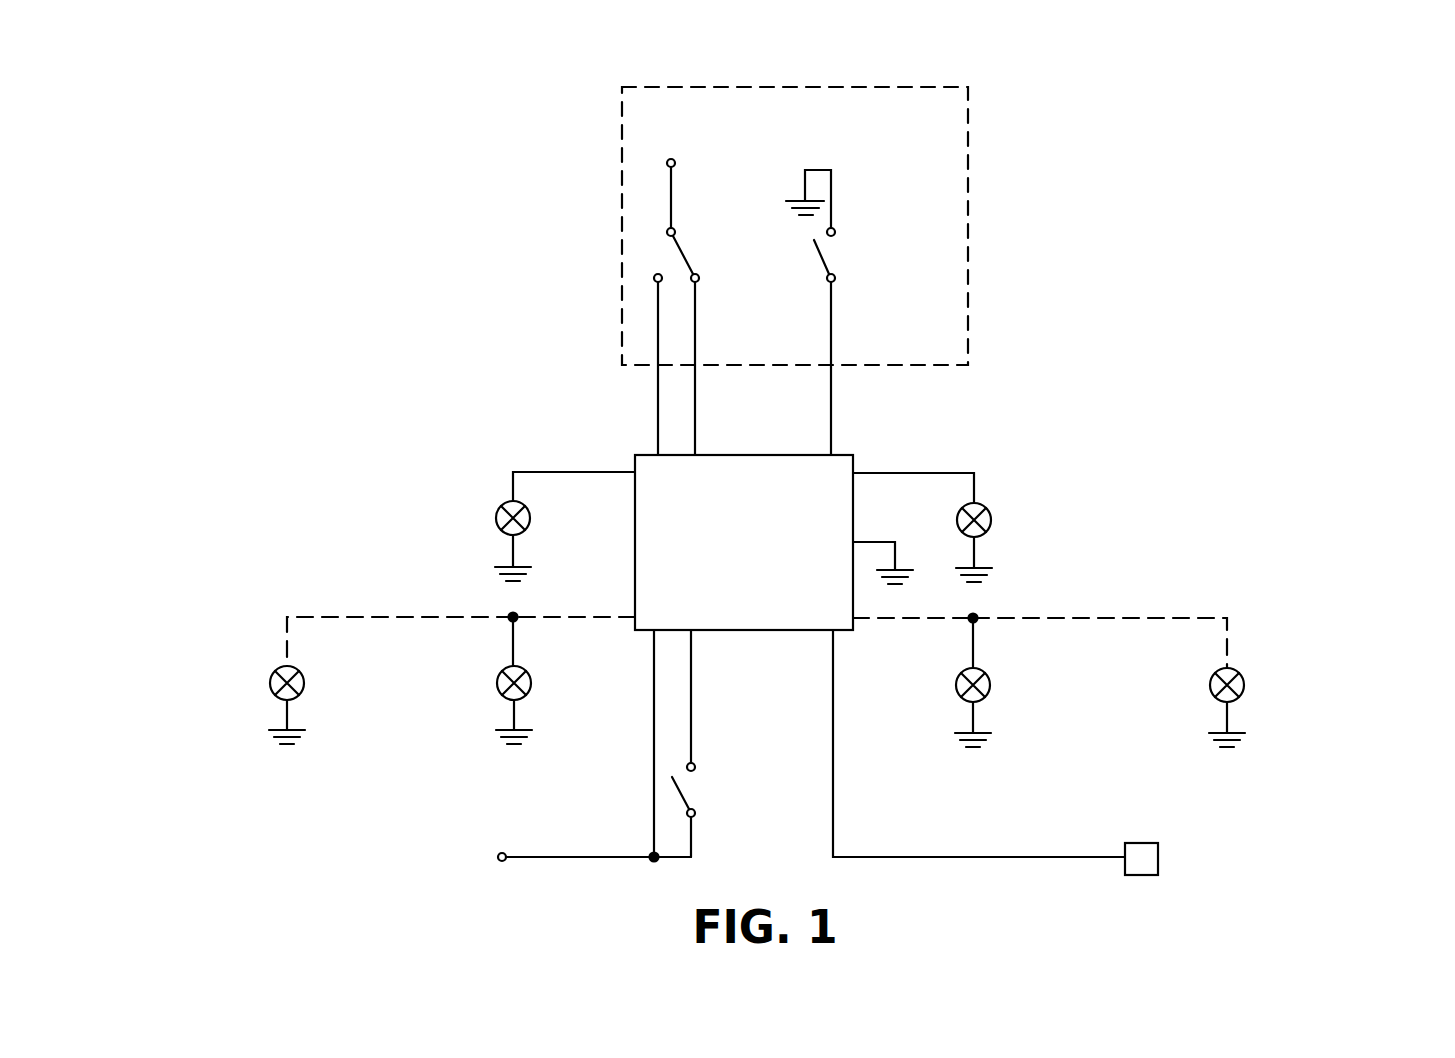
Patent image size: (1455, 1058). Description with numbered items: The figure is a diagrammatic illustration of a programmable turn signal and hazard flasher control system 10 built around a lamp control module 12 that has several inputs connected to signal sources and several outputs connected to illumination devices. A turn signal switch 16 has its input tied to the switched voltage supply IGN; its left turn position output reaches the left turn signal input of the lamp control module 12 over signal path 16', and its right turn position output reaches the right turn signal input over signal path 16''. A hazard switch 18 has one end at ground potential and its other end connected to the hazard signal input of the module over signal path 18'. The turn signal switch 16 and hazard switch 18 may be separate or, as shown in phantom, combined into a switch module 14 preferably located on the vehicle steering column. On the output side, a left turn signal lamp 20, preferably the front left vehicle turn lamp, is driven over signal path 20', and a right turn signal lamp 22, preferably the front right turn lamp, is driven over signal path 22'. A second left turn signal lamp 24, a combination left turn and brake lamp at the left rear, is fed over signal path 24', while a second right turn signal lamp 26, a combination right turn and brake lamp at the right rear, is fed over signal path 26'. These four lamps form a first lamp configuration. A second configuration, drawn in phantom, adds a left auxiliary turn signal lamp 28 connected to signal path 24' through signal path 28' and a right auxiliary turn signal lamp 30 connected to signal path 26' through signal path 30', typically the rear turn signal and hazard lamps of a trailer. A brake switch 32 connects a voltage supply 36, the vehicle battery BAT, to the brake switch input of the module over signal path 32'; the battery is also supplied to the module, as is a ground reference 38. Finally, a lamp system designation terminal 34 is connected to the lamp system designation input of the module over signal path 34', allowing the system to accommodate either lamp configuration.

The turn signal and hazard flasher control system 10 is at (1162, 336).
The lamp control module 12 is at (817, 631).
The combined switch module 14 is at (968, 190).
The turn signal switch 16 is at (676, 235).
The signal path 16' is at (619, 368).
The signal path 16'' is at (737, 368).
The hazard switch 18 is at (849, 267).
The signal path 18' is at (871, 368).
The left turn signal lamp 20 is at (474, 536).
The signal path 20' is at (574, 454).
The right turn signal lamp 22 is at (1056, 519).
The signal path 22' is at (913, 456).
The second left turn signal lamp 24 is at (463, 702).
The signal path 24' is at (572, 608).
The second right turn signal lamp 26 is at (1032, 707).
The signal path 26' is at (915, 650).
The left auxiliary turn signal lamp 28 is at (192, 680).
The signal path 28' is at (399, 608).
The right auxiliary turn signal lamp 30 is at (1328, 683).
The signal path 30' is at (1100, 612).
The brake switch 32 is at (701, 807).
The signal path 32' is at (727, 696).
The lamp system designation terminal 34 is at (1231, 834).
The signal path 34' is at (979, 743).
The voltage supply 36 is at (502, 852).
The ground reference 38 is at (871, 542).